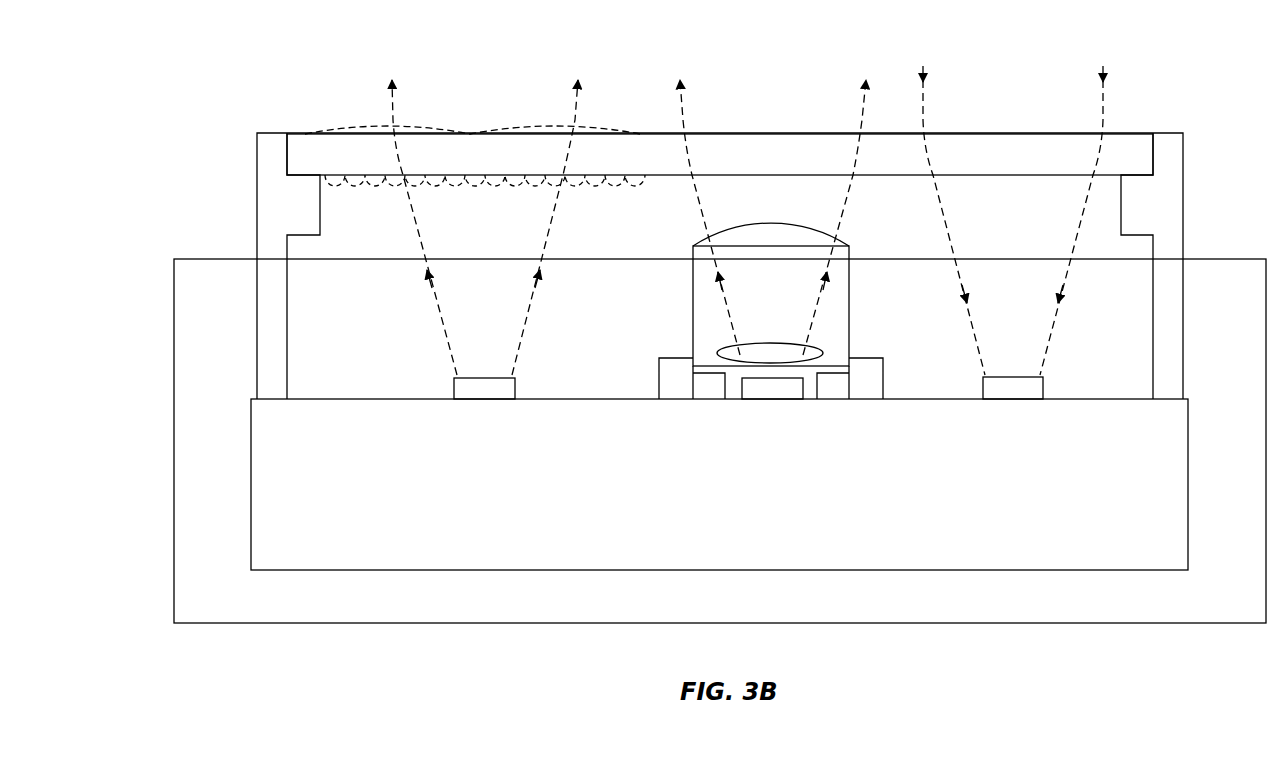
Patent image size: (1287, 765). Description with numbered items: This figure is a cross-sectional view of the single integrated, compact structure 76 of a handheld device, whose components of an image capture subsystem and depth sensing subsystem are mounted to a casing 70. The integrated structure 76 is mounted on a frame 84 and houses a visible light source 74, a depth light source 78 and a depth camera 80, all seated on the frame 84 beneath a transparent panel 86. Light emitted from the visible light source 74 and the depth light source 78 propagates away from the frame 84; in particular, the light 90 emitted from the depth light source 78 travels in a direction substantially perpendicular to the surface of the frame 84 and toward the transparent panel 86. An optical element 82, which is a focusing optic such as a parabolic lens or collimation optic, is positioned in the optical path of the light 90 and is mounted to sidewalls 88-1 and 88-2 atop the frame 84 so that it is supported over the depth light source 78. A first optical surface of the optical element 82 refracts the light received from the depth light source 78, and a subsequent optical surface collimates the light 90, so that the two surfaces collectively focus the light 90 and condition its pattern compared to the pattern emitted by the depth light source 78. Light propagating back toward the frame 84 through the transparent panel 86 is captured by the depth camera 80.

The casing 70 is at (734, 607).
The visible light source 74 is at (485, 398).
The integrated structure 76 is at (1172, 60).
The depth light source 78 is at (775, 398).
The depth camera 80 is at (1013, 398).
The optical element 82 is at (693, 282).
The frame 84 is at (734, 497).
The transparent panel 86 is at (762, 134).
The sidewall 88-1 is at (659, 358).
The sidewall 88-2 is at (882, 358).
The light 90 is at (765, 344).